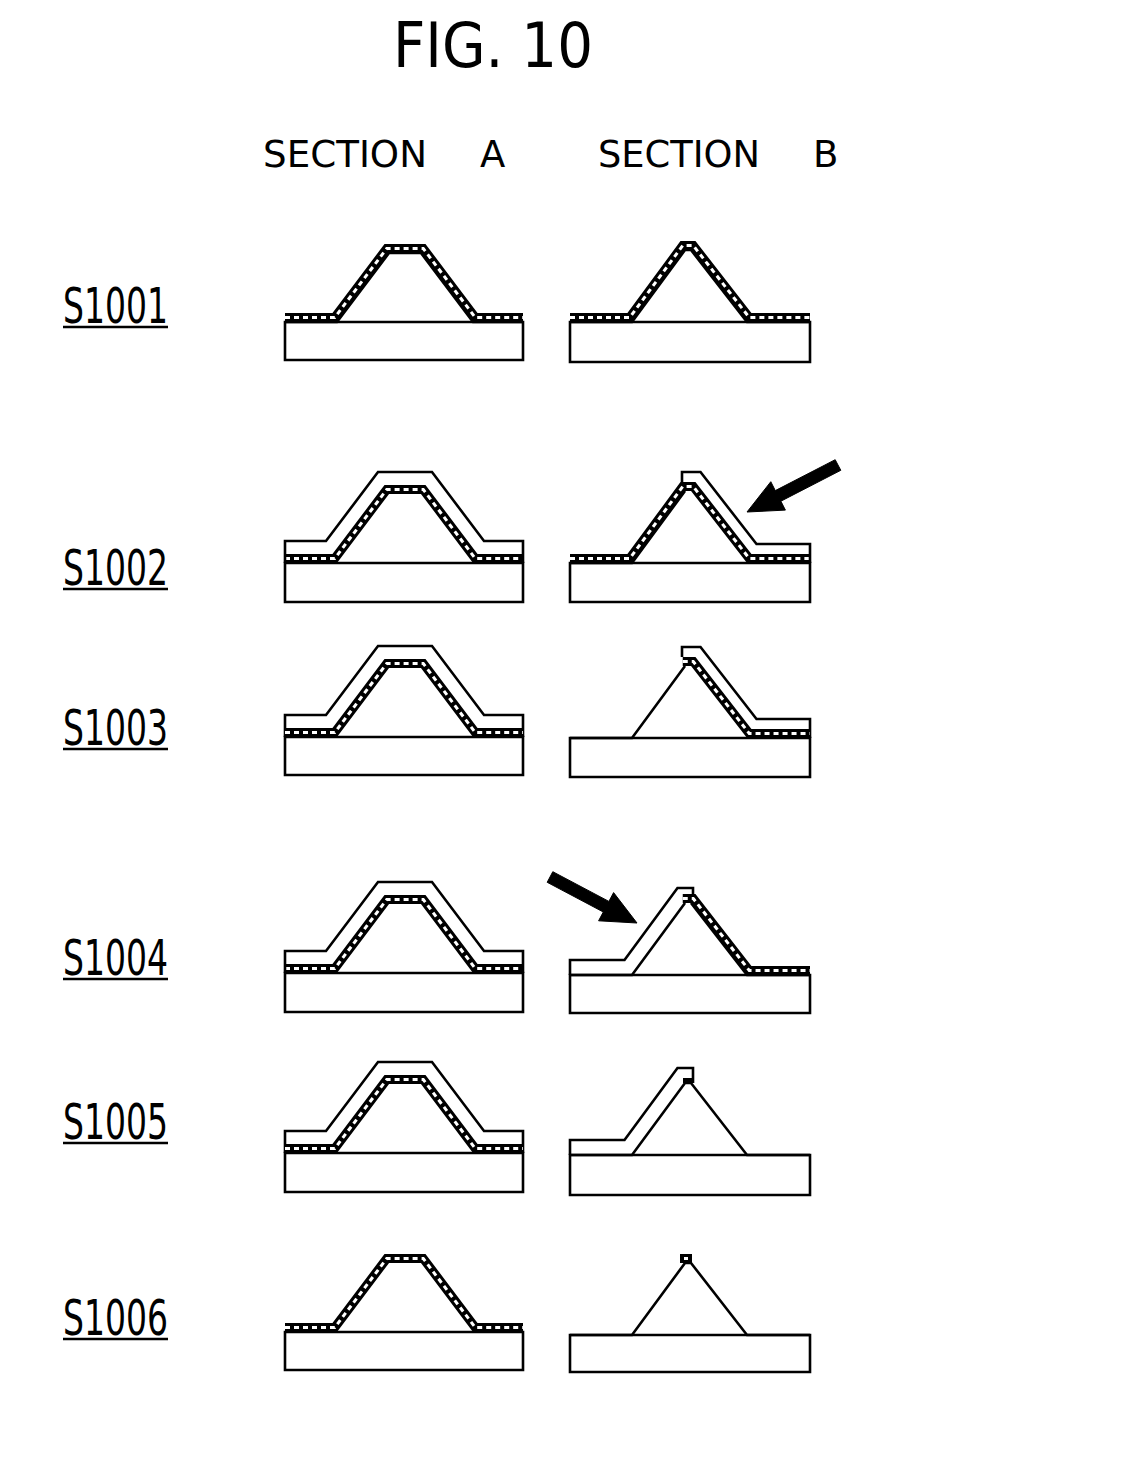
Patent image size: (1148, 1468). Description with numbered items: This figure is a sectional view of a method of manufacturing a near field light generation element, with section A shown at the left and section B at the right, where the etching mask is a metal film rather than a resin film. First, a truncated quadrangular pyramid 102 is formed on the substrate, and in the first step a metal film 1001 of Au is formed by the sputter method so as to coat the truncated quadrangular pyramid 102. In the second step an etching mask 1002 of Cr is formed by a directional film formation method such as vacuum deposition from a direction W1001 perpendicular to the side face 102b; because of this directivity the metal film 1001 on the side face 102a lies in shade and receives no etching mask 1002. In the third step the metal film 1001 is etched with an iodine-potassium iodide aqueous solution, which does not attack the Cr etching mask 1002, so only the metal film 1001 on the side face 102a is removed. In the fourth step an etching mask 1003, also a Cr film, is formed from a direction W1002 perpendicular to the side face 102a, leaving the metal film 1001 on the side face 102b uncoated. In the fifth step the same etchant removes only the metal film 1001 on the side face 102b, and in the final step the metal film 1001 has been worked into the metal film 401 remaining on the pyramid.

The truncated quadrangular pyramid 102 is at (398, 302).
The metal film 1001 is at (443, 270).
The etching mask 1002 is at (352, 522).
The direction W1001 is at (843, 468).
The side face 102a is at (657, 530).
The etching mask 1003 is at (342, 945).
The direction W1002 is at (568, 876).
The side face 102b is at (713, 930).
The metal film 401 is at (447, 1290).